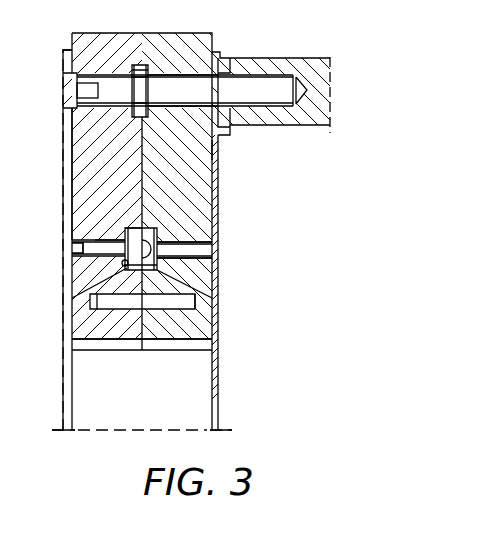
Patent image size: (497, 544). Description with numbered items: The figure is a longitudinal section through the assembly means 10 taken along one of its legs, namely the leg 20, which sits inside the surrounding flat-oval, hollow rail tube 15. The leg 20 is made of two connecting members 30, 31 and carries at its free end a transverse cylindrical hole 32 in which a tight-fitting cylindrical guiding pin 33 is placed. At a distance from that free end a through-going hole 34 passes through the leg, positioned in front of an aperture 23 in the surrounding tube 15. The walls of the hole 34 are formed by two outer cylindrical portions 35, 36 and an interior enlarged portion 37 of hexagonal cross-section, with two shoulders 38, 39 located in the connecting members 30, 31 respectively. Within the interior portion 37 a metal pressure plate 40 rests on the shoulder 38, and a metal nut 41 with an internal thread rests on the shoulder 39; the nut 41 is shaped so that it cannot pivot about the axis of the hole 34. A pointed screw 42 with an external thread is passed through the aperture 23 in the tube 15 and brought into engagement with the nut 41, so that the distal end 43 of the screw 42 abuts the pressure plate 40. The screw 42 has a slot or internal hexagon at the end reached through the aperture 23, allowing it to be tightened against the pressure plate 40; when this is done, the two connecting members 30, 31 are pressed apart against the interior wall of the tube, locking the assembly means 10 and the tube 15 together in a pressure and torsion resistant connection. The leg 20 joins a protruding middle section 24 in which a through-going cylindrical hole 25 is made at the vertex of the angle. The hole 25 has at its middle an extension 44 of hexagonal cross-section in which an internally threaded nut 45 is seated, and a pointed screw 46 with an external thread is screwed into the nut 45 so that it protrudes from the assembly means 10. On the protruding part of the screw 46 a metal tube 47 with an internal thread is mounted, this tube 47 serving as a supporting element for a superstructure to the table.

The assembly means 10 is at (63, 50).
The rail tube 15 is at (218, 377).
The leg 20 is at (187, 173).
The aperture 23 is at (70, 248).
The protruding middle section 24 is at (63, 108).
The through-going cylindrical hole 25 is at (70, 78).
The connecting member 30 is at (213, 150).
The connecting member 31 is at (75, 137).
The transverse cylindrical hole 32 is at (72, 312).
The guiding pin 33 is at (190, 303).
The through-going hole 34 is at (205, 250).
The outer cylindrical portion 35 is at (184, 250).
The outer cylindrical portion 36 is at (75, 275).
The interior enlarged portion 37 is at (130, 228).
The shoulder 38 is at (170, 283).
The shoulder 39 is at (90, 302).
The pressure plate 40 is at (150, 228).
The nut 41 is at (112, 240).
The pointed screw 42 is at (97, 250).
The distal end 43 is at (160, 245).
The extension 44 is at (136, 64).
The nut 45 is at (144, 74).
The pointed screw 46 is at (188, 82).
The metal tube 47 is at (262, 58).